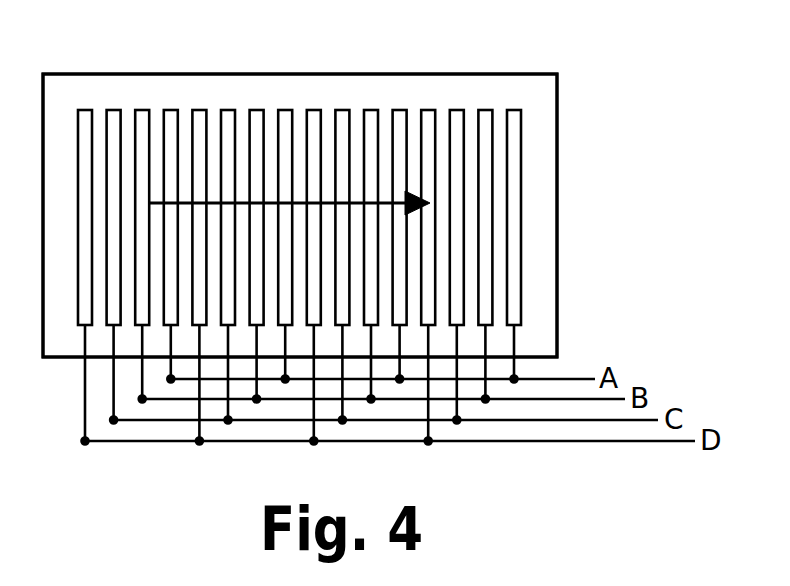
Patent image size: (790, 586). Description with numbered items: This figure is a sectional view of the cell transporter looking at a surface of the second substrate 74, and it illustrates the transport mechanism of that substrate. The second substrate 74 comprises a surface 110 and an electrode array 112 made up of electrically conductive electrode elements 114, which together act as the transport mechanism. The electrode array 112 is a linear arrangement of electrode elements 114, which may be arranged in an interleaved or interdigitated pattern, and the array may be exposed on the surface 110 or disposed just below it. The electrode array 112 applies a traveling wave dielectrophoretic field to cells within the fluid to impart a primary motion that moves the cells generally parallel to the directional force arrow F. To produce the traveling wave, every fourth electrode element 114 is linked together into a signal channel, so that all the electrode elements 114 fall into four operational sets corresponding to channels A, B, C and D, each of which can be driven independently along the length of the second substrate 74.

The second substrate 74 is at (462, 74).
The surface 110 is at (513, 93).
The electrode array 112 is at (205, 108).
The electrode elements 114 is at (345, 108).
The directional force arrow F is at (388, 203).